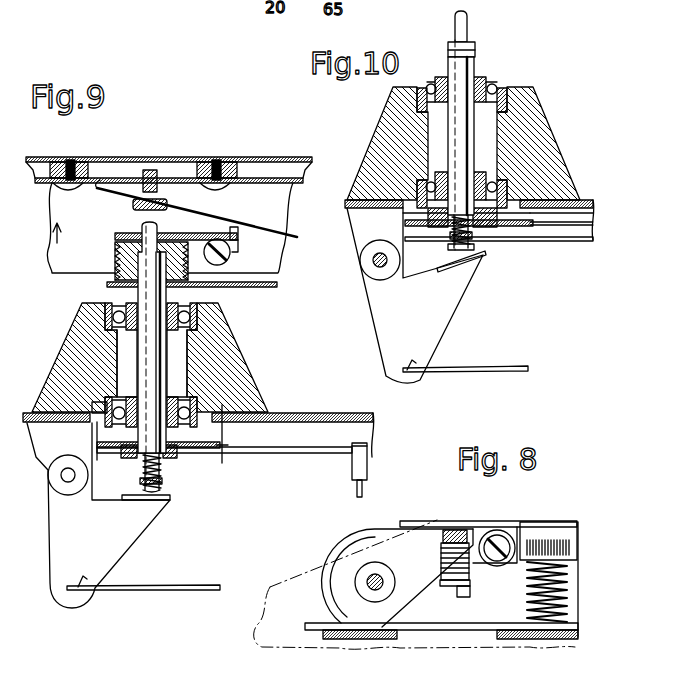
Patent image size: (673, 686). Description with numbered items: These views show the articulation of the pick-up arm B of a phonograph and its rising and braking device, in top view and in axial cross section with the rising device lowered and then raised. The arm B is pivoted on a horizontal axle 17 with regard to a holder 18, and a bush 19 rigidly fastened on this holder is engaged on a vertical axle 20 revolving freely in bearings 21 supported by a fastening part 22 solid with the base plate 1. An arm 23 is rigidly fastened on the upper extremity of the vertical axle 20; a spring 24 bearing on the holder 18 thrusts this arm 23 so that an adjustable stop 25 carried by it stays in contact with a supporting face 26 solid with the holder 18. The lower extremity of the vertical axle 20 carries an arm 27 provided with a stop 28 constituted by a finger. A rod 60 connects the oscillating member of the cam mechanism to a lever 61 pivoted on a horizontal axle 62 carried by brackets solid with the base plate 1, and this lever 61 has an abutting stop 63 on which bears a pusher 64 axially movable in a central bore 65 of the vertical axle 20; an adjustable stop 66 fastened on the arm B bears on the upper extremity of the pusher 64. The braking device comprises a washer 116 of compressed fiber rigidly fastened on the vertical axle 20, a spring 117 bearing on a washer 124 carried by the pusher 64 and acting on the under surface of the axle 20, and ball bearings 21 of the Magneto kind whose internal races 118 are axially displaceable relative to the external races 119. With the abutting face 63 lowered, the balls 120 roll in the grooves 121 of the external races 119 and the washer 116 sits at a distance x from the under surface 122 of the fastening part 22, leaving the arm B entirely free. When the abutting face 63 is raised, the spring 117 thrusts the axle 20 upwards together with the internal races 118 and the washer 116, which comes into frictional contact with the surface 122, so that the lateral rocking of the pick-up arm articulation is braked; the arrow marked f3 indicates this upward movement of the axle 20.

In FIG. 9, the base plate 1 is at (312, 413).
In FIG. 10, the base plate 1 is at (585, 200).
In FIG. 8, the horizontal axle 17 is at (527, 600).
In FIG. 9, the holder 18 is at (170, 235).
In FIG. 8, the holder 18 is at (328, 618).
In FIG. 9, the bush 19 is at (183, 272).
In FIG. 9, the vertical axle 20 is at (146, 366).
In FIG. 10, the vertical axle 20 is at (458, 146).
In FIG. 9, the bearings 21 is at (100, 327).
In FIG. 9, the fastening part 22 is at (230, 328).
In FIG. 10, the fastening part 22 is at (543, 135).
In FIG. 9, the arm 23 is at (207, 233).
In FIG. 8, the arm 23 is at (427, 578).
In FIG. 9, the spring 24 is at (115, 258).
In FIG. 9, the adjustable stop 25 is at (230, 250).
In FIG. 8, the adjustable stop 25 is at (450, 530).
In FIG. 8, the supporting face 26 is at (413, 523).
In FIG. 9, the arm 27 is at (224, 441).
In FIG. 10, the arm 27 is at (550, 240).
In FIG. 9, the stop 28 is at (353, 484).
In FIG. 9, the rod 60 is at (160, 576).
In FIG. 10, the rod 60 is at (483, 368).
In FIG. 9, the lever 61 is at (98, 515).
In FIG. 10, the lever 61 is at (415, 295).
In FIG. 9, the horizontal axle 62 is at (61, 475).
In FIG. 10, the horizontal axle 62 is at (372, 260).
In FIG. 9, the abutting stop 63 is at (132, 503).
In FIG. 10, the abutting stop 63 is at (436, 272).
In FIG. 9, the pusher 64 is at (162, 468).
In FIG. 10, the pusher 64 is at (457, 14).
In FIG. 8, the pusher 64 is at (380, 577).
In FIG. 9, the central bore 65 is at (140, 236).
In FIG. 9, the adjustable stop 66 is at (133, 198).
In FIG. 9, the washer 116 is at (130, 456).
In FIG. 10, the washer 116 is at (413, 227).
In FIG. 9, the spring 117 is at (142, 486).
In FIG. 10, the spring 117 is at (450, 248).
In FIG. 9, the internal ball races 118 is at (165, 336).
In FIG. 10, the internal ball races 118 is at (437, 76).
In FIG. 9, the external race 119 is at (203, 303).
In FIG. 9, the balls 120 is at (113, 305).
In FIG. 10, the balls 120 is at (490, 83).
In FIG. 9, the grooves 121 is at (200, 318).
In FIG. 10, the grooves 121 is at (508, 108).
In FIG. 9, the under surface 122 is at (97, 425).
In FIG. 10, the under surface 122 is at (403, 210).
In FIG. 10, the washer 124 is at (475, 248).
In FIG. 9, the arm B is at (260, 157).
In FIG. 8, the arm B is at (303, 593).
In FIG. 9, the force f3 is at (53, 234).
In FIG. 9, the distance x is at (222, 433).